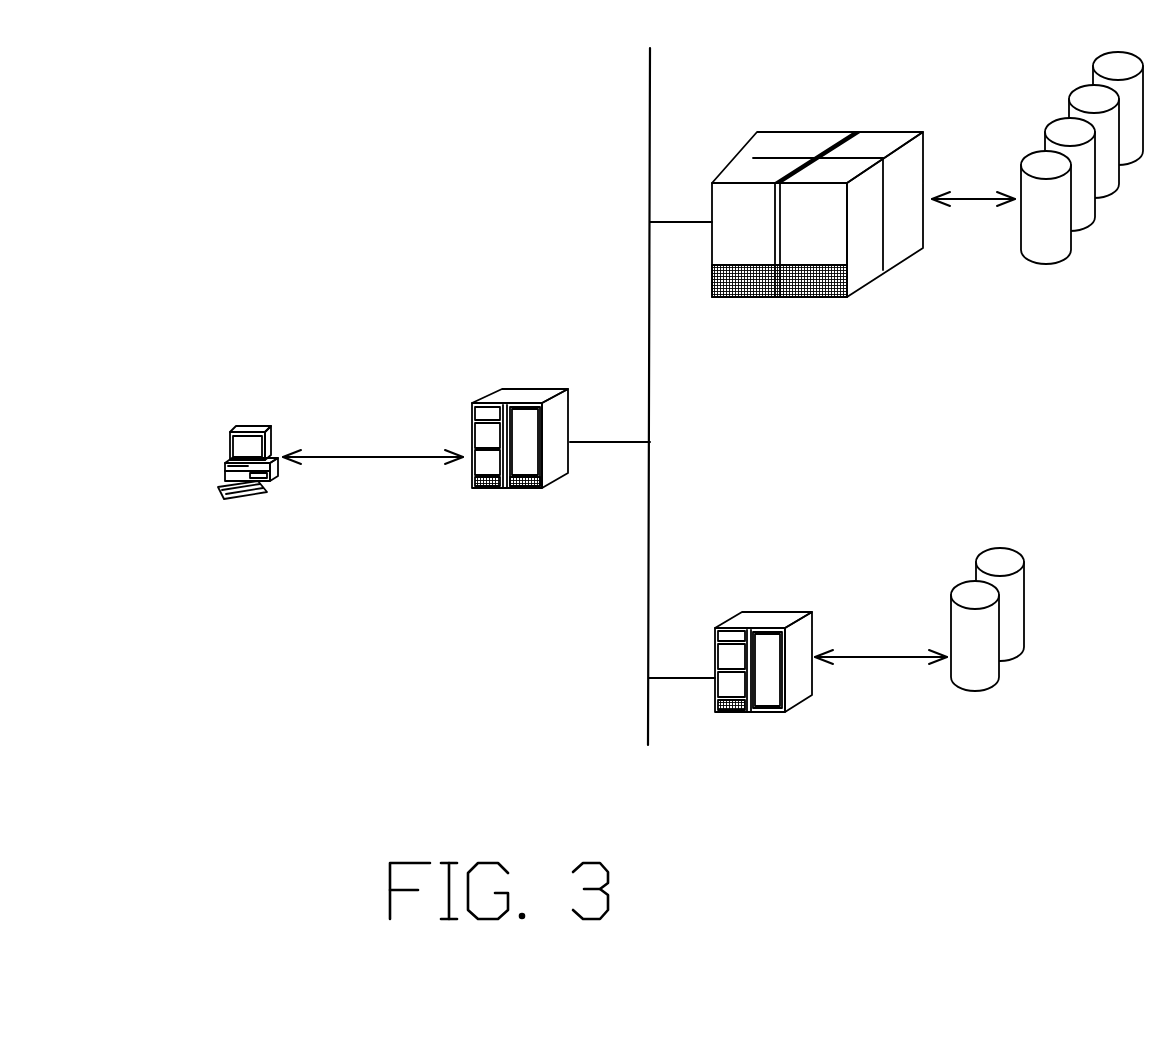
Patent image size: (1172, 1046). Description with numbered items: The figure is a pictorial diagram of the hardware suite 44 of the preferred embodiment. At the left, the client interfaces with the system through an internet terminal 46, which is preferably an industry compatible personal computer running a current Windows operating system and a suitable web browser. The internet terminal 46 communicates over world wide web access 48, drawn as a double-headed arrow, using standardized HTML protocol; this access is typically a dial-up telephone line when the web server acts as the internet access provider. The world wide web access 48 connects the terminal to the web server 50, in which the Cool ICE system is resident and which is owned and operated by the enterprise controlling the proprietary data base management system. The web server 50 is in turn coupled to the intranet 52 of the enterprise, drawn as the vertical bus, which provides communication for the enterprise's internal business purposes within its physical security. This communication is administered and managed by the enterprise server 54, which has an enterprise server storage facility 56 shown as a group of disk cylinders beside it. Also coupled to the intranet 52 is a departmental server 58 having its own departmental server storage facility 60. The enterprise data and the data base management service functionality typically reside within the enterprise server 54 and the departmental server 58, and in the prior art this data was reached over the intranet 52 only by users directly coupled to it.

The hardware suite 44 is at (675, 397).
The internet terminal 46 is at (263, 468).
The world wide web access 48 is at (373, 429).
The web server 50 is at (515, 456).
The intranet 52 is at (662, 396).
The enterprise server 54 is at (845, 219).
The enterprise server storage facility 56 is at (1082, 176).
The departmental server 58 is at (869, 663).
The departmental server storage facility 60 is at (997, 637).